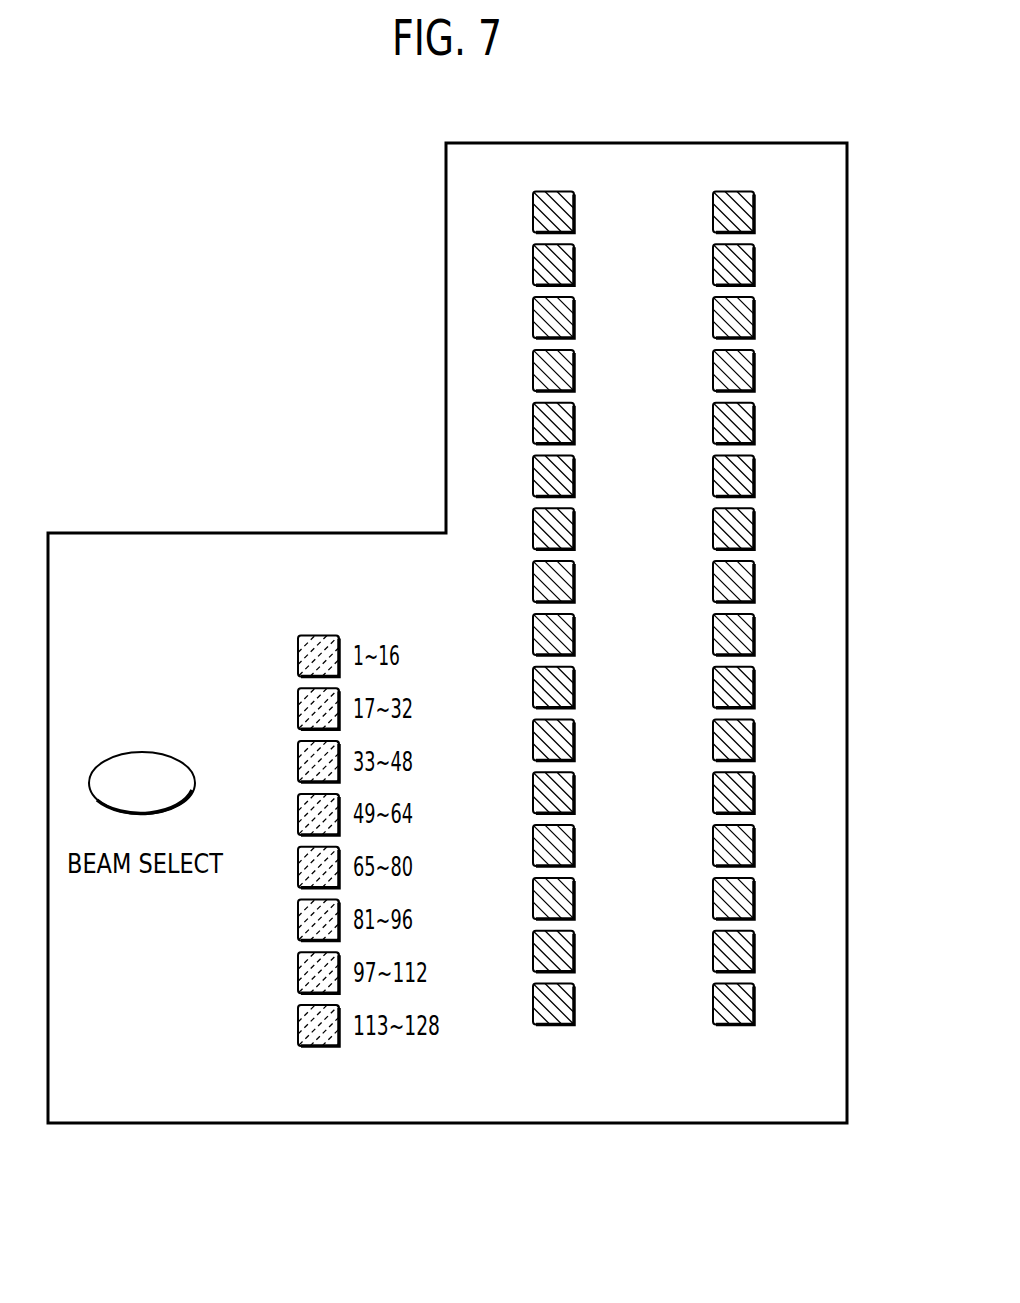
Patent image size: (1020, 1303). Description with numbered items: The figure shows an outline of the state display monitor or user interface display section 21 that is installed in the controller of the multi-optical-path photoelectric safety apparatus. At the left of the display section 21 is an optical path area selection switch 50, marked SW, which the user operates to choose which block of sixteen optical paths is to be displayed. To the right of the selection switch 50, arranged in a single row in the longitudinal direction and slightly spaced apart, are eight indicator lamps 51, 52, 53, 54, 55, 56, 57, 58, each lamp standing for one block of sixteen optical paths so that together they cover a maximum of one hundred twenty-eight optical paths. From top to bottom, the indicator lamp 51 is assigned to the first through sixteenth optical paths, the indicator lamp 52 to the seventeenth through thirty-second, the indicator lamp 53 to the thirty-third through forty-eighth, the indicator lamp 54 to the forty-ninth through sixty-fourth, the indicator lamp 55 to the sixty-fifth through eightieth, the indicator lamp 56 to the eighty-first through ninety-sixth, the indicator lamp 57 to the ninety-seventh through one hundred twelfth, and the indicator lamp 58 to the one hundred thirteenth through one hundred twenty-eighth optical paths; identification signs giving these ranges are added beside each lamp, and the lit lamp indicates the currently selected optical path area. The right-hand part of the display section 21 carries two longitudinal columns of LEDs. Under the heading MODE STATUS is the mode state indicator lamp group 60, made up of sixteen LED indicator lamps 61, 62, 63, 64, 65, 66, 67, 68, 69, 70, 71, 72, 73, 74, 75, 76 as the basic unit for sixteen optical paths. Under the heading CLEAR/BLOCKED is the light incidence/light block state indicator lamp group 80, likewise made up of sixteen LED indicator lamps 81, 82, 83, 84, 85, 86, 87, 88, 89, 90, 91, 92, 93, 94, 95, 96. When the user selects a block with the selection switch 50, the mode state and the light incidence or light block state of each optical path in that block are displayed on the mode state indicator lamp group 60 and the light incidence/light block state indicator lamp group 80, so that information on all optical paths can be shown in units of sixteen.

The display section 21 is at (285, 1108).
The optical path area selection switch 50 is at (144, 752).
The indicator lamp 51 is at (297, 656).
The indicator lamp 52 is at (297, 709).
The indicator lamp 53 is at (297, 762).
The indicator lamp 54 is at (297, 814).
The indicator lamp 55 is at (297, 867).
The indicator lamp 56 is at (297, 920).
The indicator lamp 57 is at (297, 973).
The indicator lamp 58 is at (297, 1026).
The mode state indicator lamp group 60 is at (634, 182).
The LED indicator lamp 61 is at (575, 1004).
The LED indicator lamp 62 is at (575, 951).
The LED indicator lamp 63 is at (575, 898).
The LED indicator lamp 64 is at (575, 846).
The LED indicator lamp 65 is at (575, 793).
The LED indicator lamp 66 is at (575, 740).
The LED indicator lamp 67 is at (575, 687).
The LED indicator lamp 68 is at (575, 634).
The LED indicator lamp 69 is at (575, 582).
The LED indicator lamp 70 is at (575, 529).
The LED indicator lamp 71 is at (575, 476).
The LED indicator lamp 72 is at (575, 423).
The LED indicator lamp 73 is at (575, 370).
The LED indicator lamp 74 is at (575, 318).
The LED indicator lamp 75 is at (575, 265).
The LED indicator lamp 76 is at (575, 212).
The light incidence/light block state indicator lamp group 80 is at (832, 187).
The LED indicator lamp 81 is at (755, 1004).
The LED indicator lamp 82 is at (755, 951).
The LED indicator lamp 83 is at (755, 898).
The LED indicator lamp 84 is at (755, 846).
The LED indicator lamp 85 is at (755, 793).
The LED indicator lamp 86 is at (755, 740).
The LED indicator lamp 87 is at (755, 687).
The LED indicator lamp 88 is at (755, 634).
The LED indicator lamp 89 is at (755, 582).
The LED indicator lamp 90 is at (755, 529).
The LED indicator lamp 91 is at (755, 476).
The LED indicator lamp 92 is at (755, 423).
The LED indicator lamp 93 is at (755, 370).
The LED indicator lamp 94 is at (755, 318).
The LED indicator lamp 95 is at (755, 265).
The LED indicator lamp 96 is at (755, 212).